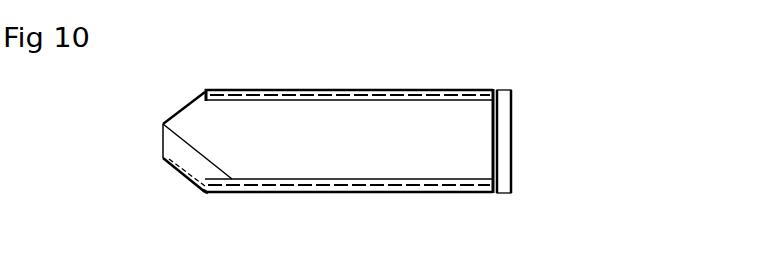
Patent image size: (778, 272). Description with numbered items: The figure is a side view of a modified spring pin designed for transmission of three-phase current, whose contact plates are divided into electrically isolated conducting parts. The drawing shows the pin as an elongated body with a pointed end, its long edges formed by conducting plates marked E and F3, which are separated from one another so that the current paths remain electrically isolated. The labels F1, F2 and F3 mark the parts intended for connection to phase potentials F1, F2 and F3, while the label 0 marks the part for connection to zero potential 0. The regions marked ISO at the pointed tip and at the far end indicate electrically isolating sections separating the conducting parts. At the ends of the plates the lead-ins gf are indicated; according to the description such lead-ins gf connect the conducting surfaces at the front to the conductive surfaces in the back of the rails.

The phase potential F1 is at (328, 141).
The phase potential F2 is at (153, 127).
The phase potential F3 is at (180, 169).
The edge / top beam E is at (349, 74).
The zero potential 0 is at (285, 88).
The insulation ISO is at (163, 147).
The lead-ins gf is at (213, 140).